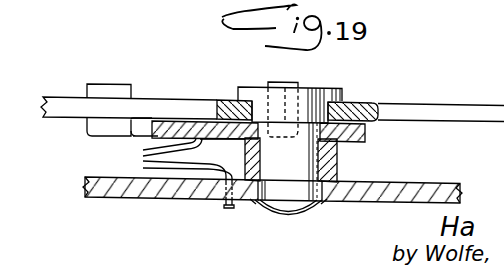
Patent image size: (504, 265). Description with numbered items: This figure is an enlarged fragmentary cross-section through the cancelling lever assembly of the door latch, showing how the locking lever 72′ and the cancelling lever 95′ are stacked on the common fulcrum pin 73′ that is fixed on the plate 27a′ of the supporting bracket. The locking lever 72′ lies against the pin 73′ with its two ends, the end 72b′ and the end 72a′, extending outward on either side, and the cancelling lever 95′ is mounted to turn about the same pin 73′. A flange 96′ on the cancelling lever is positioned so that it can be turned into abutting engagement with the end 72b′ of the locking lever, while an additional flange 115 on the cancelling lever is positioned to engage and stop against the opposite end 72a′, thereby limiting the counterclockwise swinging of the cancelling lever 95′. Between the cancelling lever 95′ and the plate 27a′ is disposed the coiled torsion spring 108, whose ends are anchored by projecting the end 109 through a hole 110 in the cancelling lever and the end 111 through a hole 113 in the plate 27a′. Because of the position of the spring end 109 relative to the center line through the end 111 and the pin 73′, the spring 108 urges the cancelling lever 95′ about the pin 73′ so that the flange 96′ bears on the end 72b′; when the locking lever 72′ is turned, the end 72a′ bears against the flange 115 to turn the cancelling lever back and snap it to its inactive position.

The locking lever 72′ is at (264, 86).
The end of the locking lever 72b′ is at (70, 97).
The end of the locking lever 72a′ is at (457, 106).
The cancelling lever flange 96′ is at (110, 84).
The cancelling lever 95′ is at (366, 133).
The spring end 109 is at (203, 115).
The additional flange 115 is at (283, 86).
The pin 73′ is at (330, 158).
The plate 27a′ is at (373, 201).
The spring 108 is at (144, 159).
The hole 110 is at (202, 132).
The hole 113 is at (224, 203).
The spring end 111 is at (232, 210).